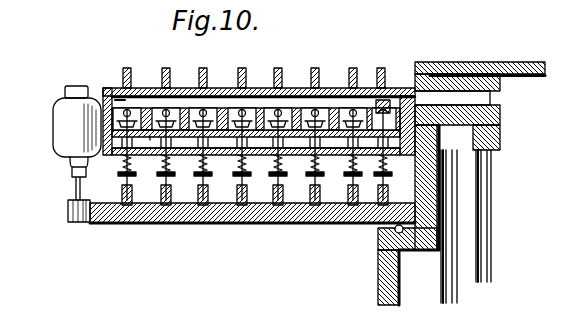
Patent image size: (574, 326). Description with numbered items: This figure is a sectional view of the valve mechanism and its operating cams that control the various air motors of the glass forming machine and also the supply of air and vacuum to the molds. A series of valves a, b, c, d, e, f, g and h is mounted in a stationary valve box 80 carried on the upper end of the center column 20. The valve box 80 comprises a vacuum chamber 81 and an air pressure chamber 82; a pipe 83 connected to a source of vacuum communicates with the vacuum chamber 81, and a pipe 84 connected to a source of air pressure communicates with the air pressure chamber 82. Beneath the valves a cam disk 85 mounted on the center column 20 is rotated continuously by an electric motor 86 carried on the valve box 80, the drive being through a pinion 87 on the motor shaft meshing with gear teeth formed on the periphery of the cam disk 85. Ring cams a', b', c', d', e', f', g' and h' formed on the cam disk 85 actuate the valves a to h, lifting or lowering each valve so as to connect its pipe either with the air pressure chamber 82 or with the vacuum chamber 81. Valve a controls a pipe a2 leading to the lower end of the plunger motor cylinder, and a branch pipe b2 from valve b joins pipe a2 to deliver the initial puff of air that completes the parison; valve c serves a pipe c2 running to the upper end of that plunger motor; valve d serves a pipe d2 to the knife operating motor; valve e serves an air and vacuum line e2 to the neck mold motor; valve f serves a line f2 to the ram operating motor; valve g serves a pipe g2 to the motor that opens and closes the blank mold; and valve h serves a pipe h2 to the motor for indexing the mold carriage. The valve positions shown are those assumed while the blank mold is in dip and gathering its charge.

The valve box 80 is at (106, 96).
The vacuum chamber 81 is at (122, 100).
The air pressure chamber 82 is at (150, 140).
The pipe 83 is at (480, 208).
The pipe 84 is at (458, 300).
The cam disk 85 is at (288, 212).
The electric motor 86 is at (62, 122).
The pinion 87 is at (68, 214).
The center column 20 is at (378, 288).
The valve a is at (387, 99).
The valve b is at (354, 100).
The valve c is at (316, 100).
The valve d is at (280, 100).
The valve e is at (243, 100).
The valve f is at (204, 99).
The valve g is at (168, 100).
The valve h is at (129, 100).
The pipe a2 is at (382, 68).
The branch pipe b2 is at (354, 68).
The pipe c2 is at (316, 68).
The pipe d2 is at (279, 68).
The air and vacuum line e2 is at (242, 68).
The line f2 is at (204, 68).
The pipe g2 is at (166, 68).
The pipe h2 is at (127, 68).
The ring cam a' is at (370, 191).
The ring cam b' is at (347, 189).
The ring cam c' is at (307, 189).
The ring cam d' is at (269, 189).
The ring cam e' is at (237, 189).
The ring cam f' is at (201, 189).
The ring cam g' is at (166, 190).
The ring cam h' is at (123, 189).